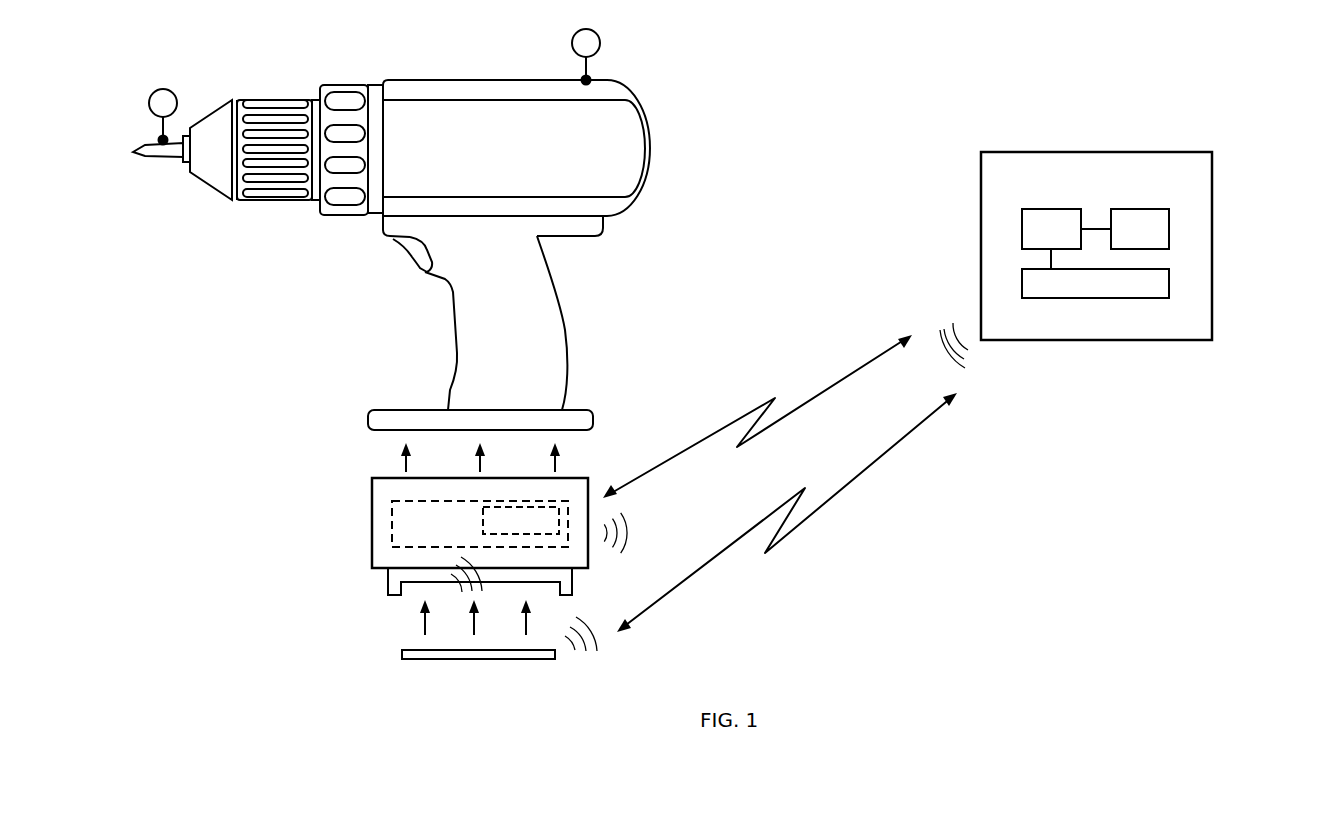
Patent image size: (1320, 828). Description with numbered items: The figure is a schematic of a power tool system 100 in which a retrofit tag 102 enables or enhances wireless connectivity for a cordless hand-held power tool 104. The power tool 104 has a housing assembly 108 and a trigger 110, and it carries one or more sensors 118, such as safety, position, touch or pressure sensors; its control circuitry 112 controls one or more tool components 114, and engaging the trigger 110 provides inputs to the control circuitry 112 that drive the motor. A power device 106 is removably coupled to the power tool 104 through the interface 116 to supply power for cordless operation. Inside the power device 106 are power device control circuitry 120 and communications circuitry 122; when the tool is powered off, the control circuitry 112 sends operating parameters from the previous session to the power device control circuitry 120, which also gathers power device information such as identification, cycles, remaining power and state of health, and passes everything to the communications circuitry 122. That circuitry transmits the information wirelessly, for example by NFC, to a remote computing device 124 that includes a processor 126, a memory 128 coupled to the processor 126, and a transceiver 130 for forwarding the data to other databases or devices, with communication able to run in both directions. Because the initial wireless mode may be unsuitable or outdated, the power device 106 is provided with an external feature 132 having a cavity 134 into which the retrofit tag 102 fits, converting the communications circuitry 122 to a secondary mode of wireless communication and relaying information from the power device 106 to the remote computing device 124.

The power tool system 100 is at (874, 57).
The retrofit tag 102 is at (478, 672).
The power tool 104 is at (391, 188).
The power device 106 is at (471, 539).
The housing assembly 108 is at (522, 323).
The trigger 110 is at (401, 275).
The control circuitry 112 is at (582, 358).
The tool components 114 is at (586, 337).
The interface 116 is at (502, 437).
The sensors 118 is at (401, 81).
The power device control circuitry 120 is at (453, 531).
The communications circuitry 122 is at (498, 523).
The remote computing device 124 is at (1108, 260).
The processor 126 is at (1032, 239).
The memory 128 is at (1158, 223).
The transceiver 130 is at (1095, 301).
The external feature 132 is at (454, 587).
The cavity 134 is at (585, 621).